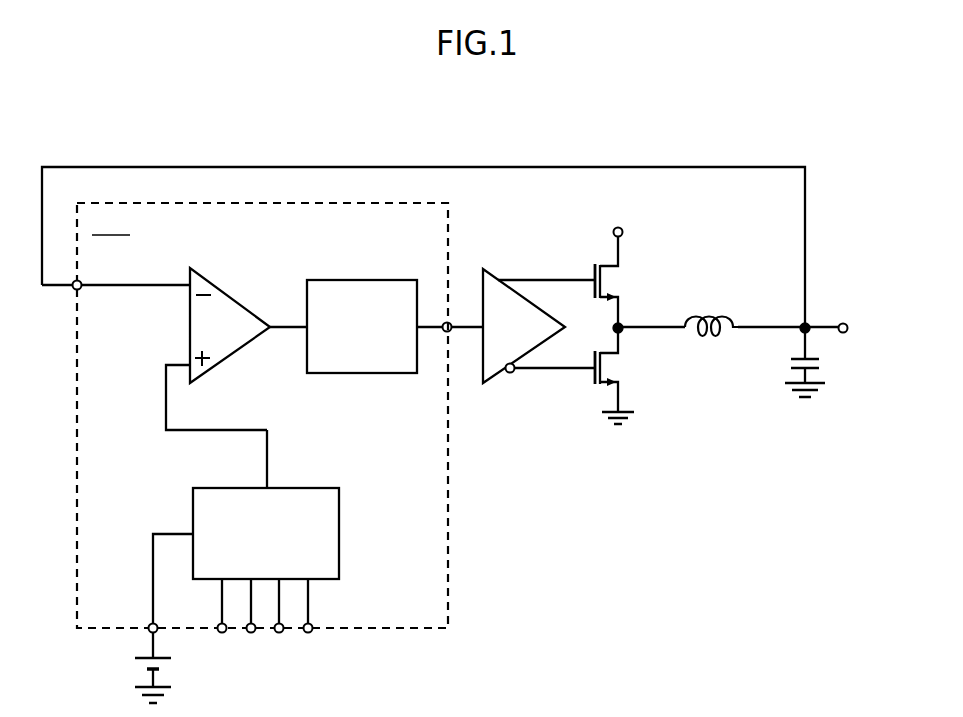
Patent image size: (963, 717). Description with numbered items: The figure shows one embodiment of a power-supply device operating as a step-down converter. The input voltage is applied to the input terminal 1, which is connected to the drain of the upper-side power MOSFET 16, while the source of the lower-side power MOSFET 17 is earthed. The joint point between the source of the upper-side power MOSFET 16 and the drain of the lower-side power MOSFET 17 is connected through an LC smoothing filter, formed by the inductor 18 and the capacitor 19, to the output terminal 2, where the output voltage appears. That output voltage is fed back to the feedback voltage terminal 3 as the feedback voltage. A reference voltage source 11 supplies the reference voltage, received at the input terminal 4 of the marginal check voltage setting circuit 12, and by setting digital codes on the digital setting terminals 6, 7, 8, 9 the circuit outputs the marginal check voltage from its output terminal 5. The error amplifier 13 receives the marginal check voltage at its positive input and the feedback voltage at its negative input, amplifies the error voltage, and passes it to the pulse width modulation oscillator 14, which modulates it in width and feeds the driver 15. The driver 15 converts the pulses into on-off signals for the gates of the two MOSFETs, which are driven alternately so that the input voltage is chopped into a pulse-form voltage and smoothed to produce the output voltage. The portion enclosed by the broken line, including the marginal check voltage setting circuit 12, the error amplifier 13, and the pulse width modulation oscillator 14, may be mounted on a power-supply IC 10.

The input terminal 1 is at (623, 232).
The output terminal 2 is at (848, 328).
The feedback voltage terminal 3 is at (72, 291).
The input terminal 4 is at (148, 633).
The output terminal 5 is at (270, 460).
The digital setting terminal 6 is at (222, 633).
The digital setting terminal 7 is at (251, 633).
The digital setting terminal 8 is at (279, 633).
The digital setting terminal 9 is at (308, 633).
The power-supply IC 10 is at (452, 512).
The reference voltage source 11 is at (136, 668).
The marginal check voltage setting circuit 12 is at (340, 535).
The error amplifier 13 is at (236, 299).
The pulse width modulation oscillator 14 is at (358, 280).
The driver 15 is at (497, 271).
The upper-side power MOSFET 16 is at (604, 281).
The lower-side power MOSFET 17 is at (604, 362).
The inductor 18 is at (712, 339).
The capacitor 19 is at (820, 363).